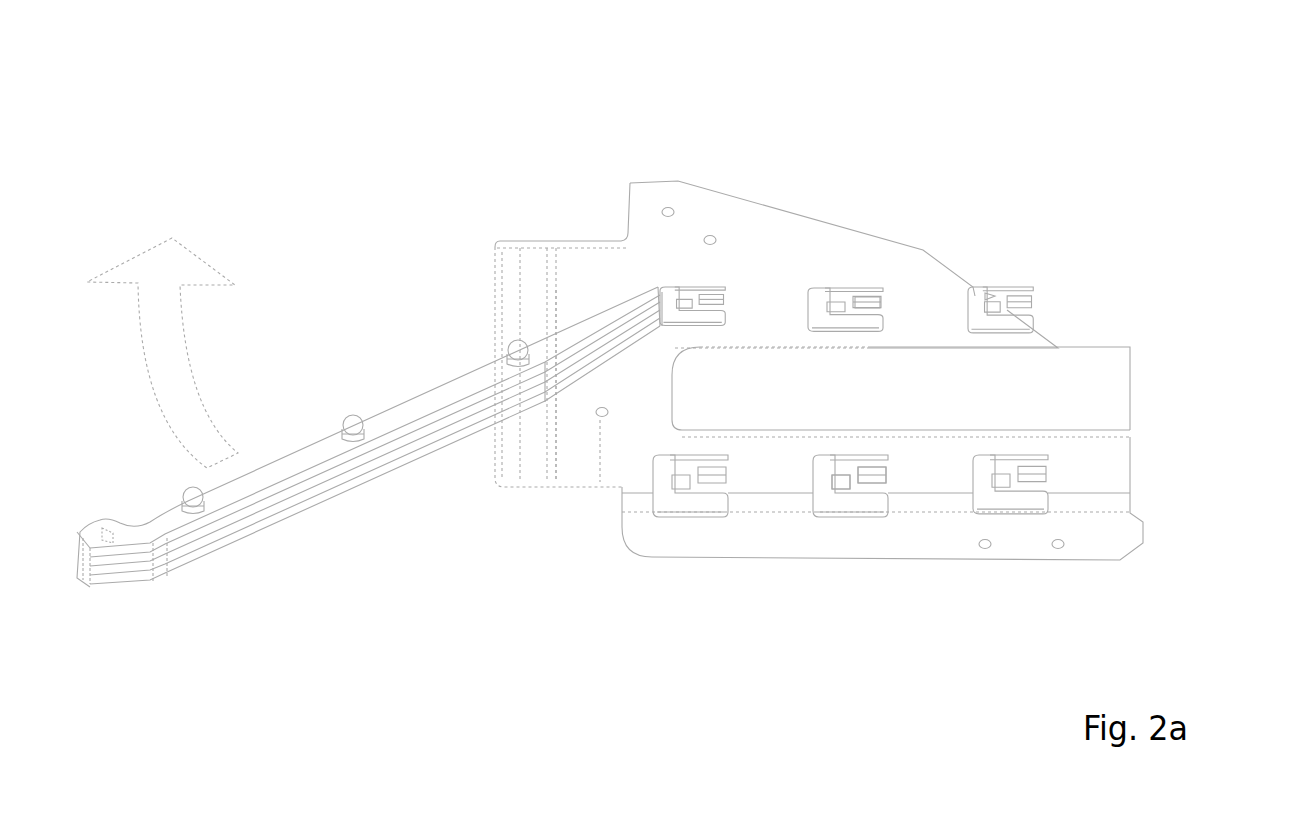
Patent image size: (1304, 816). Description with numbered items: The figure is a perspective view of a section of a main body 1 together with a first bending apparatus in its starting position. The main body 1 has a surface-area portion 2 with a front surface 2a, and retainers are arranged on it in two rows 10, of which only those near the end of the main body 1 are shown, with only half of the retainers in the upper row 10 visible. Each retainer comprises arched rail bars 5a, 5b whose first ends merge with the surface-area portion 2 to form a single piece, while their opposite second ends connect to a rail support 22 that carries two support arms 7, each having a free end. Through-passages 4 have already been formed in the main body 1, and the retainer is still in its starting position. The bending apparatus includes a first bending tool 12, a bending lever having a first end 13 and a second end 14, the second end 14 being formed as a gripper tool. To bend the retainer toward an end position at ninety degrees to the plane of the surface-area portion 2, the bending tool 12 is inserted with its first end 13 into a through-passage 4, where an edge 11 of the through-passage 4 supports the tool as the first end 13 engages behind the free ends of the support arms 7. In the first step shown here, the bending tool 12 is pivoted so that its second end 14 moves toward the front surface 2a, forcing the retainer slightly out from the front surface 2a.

The main body 1 is at (740, 233).
The surface-area portion 2 is at (523, 287).
The front surface 2a is at (570, 283).
The through-passage 4 is at (677, 300).
The arched rail bar 5a is at (868, 295).
The arched rail bar 5b is at (868, 490).
The support arm 7 is at (833, 463).
The row 10 is at (855, 388).
The edge 11 is at (812, 312).
The first bending tool 12 is at (252, 522).
The first end 13 is at (660, 318).
The second end 14 is at (117, 572).
The rail support 22 is at (1062, 283).